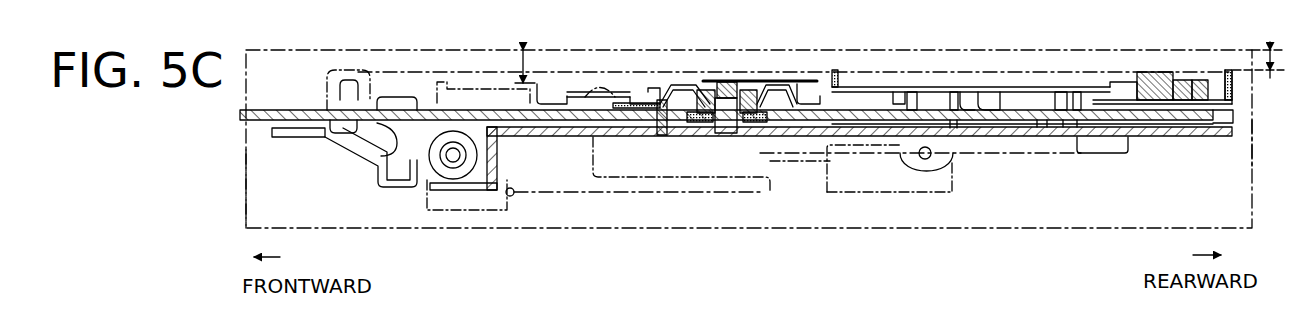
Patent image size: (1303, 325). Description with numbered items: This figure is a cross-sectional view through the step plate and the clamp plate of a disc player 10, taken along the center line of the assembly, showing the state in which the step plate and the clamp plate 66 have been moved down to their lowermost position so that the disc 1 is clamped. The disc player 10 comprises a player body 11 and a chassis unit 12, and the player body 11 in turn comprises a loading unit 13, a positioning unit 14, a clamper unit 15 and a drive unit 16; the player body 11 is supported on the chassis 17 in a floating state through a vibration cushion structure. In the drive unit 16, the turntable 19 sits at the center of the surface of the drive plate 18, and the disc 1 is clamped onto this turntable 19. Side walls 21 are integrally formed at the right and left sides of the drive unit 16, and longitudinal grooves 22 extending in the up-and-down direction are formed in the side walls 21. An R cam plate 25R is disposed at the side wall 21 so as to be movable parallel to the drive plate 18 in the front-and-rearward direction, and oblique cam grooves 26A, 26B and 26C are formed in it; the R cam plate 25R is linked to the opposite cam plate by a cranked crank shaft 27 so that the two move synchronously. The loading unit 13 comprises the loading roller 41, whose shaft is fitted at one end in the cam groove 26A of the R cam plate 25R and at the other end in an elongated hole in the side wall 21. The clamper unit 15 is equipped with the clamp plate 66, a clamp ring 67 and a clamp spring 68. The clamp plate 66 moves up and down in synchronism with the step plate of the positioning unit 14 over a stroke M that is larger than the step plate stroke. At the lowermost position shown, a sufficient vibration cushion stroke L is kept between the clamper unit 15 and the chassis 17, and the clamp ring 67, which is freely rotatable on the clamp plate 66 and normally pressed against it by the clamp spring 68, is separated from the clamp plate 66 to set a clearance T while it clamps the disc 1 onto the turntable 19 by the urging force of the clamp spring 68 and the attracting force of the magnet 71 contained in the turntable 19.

The disc 1 is at (248, 122).
The disc player 10 is at (278, 41).
The player body 11 is at (926, 68).
The chassis unit 12 is at (240, 175).
The loading unit 13 is at (491, 167).
The positioning unit 14 is at (985, 82).
The clamper unit 15 is at (657, 70).
The drive unit 16 is at (1207, 146).
The chassis 17 is at (245, 210).
The drive plate 18 is at (1169, 138).
The turntable 19 is at (591, 137).
The side walls 21 is at (967, 95).
The longitudinal grooves 22 is at (627, 97).
The R cam plate 25R is at (372, 68).
The cam groove 26A is at (413, 150).
The cam groove 26B is at (847, 112).
The cam groove 26C is at (598, 82).
The crank shaft 27 is at (392, 158).
The loading roller 41 is at (418, 156).
The clamp plate 66 is at (560, 85).
The clamp ring 67 is at (803, 100).
The clamp spring 68 is at (715, 88).
The magnet 71 is at (750, 124).
The stroke M is at (519, 64).
The clearance T is at (817, 83).
The vibration cushion stroke L is at (1266, 60).